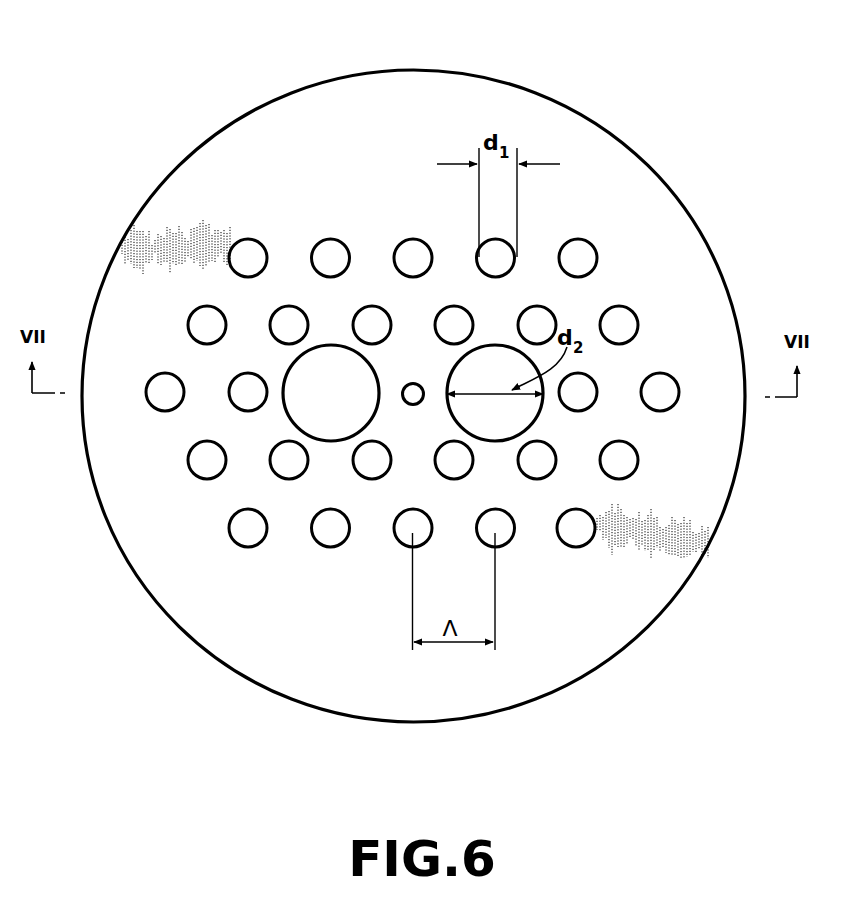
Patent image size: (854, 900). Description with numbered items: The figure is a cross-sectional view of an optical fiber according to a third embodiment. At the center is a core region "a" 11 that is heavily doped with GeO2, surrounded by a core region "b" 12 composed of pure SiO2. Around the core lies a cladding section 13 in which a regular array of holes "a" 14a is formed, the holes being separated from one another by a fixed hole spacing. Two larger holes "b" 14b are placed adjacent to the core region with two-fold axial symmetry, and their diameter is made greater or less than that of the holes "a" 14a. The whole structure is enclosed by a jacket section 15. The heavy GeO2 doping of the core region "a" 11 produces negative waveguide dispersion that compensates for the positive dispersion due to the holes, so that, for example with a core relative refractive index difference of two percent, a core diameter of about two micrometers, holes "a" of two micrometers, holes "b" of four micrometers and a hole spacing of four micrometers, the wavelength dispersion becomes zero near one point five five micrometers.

The core region "a" 11 is at (420, 380).
The core region "b" 12 is at (413, 443).
The cladding section 13 is at (380, 263).
The hole "a" 14a is at (572, 535).
The hole "b" 14b is at (320, 407).
The jacket section 15 is at (205, 613).